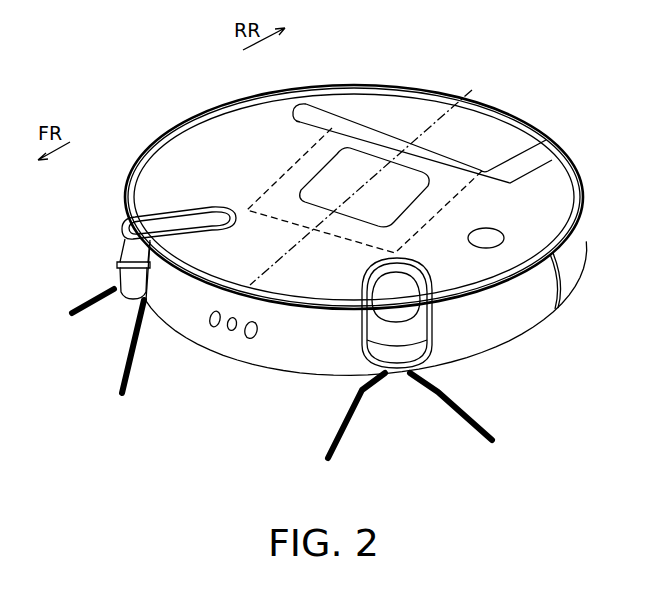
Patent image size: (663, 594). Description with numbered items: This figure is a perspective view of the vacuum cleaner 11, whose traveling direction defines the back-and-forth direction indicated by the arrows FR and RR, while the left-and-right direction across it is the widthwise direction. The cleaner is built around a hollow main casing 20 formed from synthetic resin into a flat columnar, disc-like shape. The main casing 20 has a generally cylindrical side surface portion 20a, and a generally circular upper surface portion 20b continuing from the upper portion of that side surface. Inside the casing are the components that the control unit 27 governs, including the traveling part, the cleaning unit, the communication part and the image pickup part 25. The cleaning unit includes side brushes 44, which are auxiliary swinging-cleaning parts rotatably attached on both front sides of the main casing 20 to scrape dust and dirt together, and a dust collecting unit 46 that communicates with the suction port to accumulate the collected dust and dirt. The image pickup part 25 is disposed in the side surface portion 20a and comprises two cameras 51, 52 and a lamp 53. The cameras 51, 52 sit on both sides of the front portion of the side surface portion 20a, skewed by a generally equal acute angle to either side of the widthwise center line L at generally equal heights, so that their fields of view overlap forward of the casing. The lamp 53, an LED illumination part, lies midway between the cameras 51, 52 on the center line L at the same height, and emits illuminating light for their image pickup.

The vacuum cleaner 11 is at (428, 41).
The main casing 20 is at (369, 243).
The side surface portion 20a is at (316, 368).
The upper surface portion 20b is at (280, 113).
The image pickup part 25 is at (258, 317).
The control unit 27 is at (568, 226).
The side brushes 44 is at (101, 347).
The dust collecting unit 46 is at (490, 131).
The camera 51 is at (252, 339).
The camera 52 is at (212, 326).
The lamp 53 is at (231, 331).
The widthwise center line L is at (484, 92).